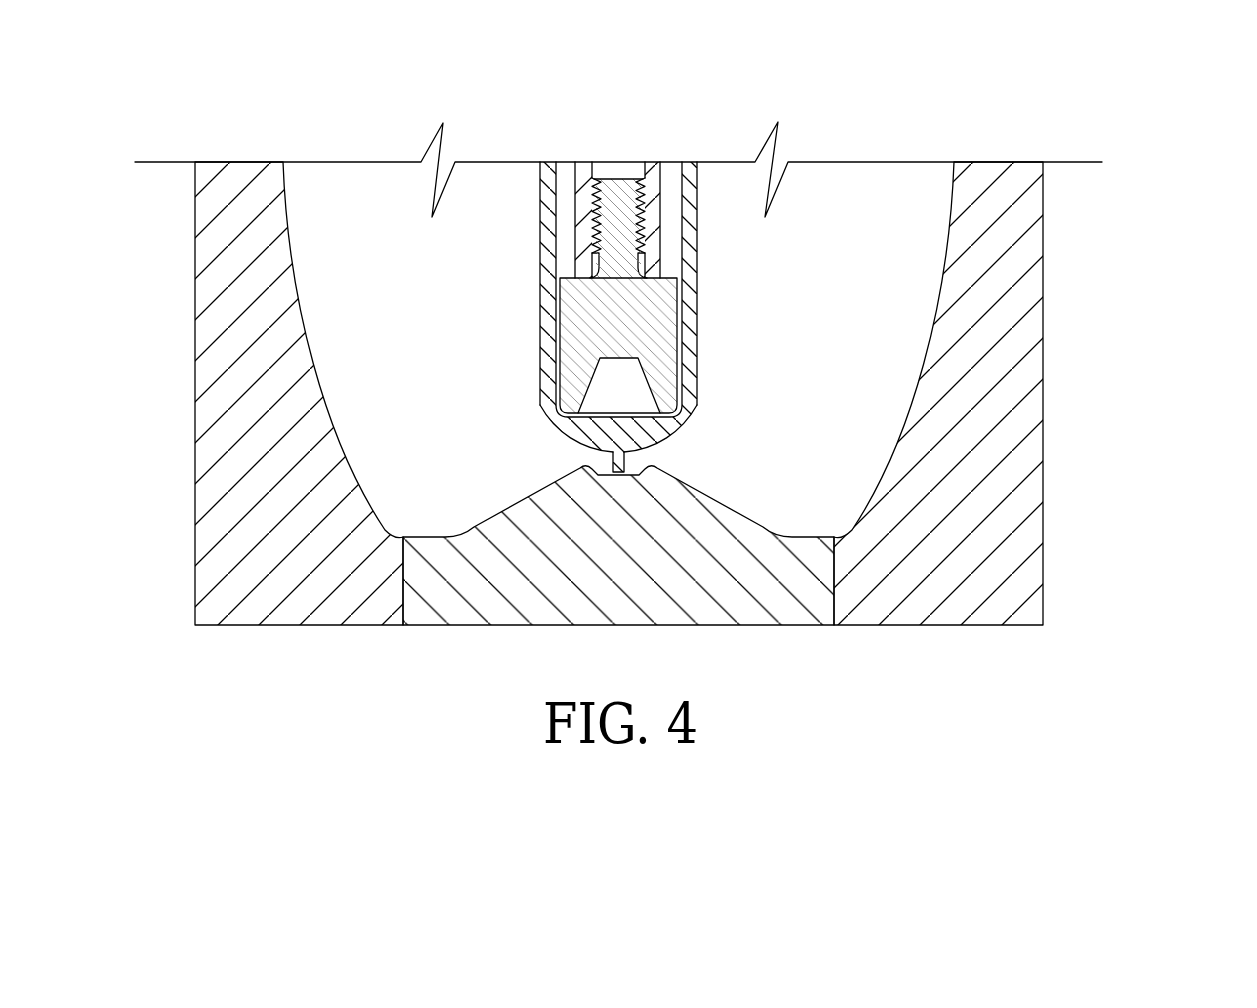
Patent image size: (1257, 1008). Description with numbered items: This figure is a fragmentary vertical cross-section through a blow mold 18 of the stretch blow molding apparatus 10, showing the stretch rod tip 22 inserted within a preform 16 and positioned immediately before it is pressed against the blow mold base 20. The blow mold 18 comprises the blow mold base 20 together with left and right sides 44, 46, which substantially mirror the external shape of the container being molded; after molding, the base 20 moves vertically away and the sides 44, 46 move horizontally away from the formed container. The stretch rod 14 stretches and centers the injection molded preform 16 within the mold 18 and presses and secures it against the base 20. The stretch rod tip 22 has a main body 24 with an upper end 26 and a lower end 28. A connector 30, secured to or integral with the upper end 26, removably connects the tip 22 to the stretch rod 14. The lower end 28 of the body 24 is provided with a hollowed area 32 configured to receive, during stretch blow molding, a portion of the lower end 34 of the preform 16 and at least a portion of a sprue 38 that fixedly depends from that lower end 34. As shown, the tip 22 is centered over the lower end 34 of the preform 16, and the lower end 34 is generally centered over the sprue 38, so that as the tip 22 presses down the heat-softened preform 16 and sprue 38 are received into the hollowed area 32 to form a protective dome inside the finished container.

The apparatus 10 is at (1151, 171).
The stretch rod 14 is at (593, 163).
The preform 16 is at (697, 292).
The blow mold 18 is at (391, 217).
The blow mold base 20 is at (663, 607).
The stretch rod tip 22 is at (665, 337).
The main body 24 is at (614, 301).
The upper end 26 is at (664, 260).
The lower end 28 is at (553, 402).
The connector 30 is at (625, 195).
The hollowed area 32 is at (645, 411).
The lower end of the preform 34 is at (542, 445).
The sprue 38 is at (624, 462).
The left side 44 is at (215, 248).
The right side 46 is at (1022, 249).